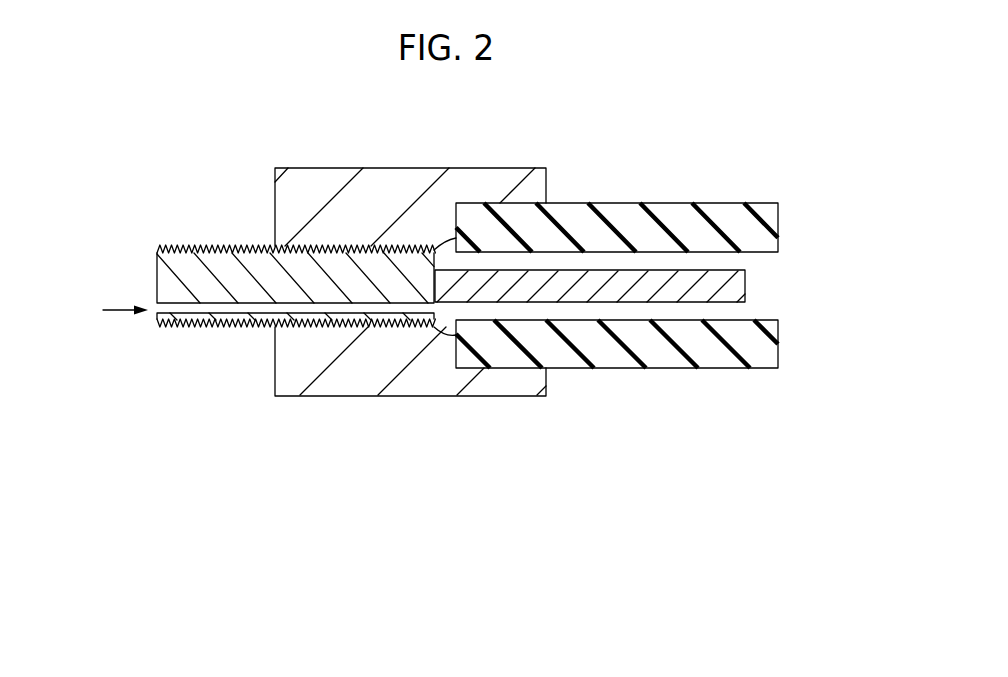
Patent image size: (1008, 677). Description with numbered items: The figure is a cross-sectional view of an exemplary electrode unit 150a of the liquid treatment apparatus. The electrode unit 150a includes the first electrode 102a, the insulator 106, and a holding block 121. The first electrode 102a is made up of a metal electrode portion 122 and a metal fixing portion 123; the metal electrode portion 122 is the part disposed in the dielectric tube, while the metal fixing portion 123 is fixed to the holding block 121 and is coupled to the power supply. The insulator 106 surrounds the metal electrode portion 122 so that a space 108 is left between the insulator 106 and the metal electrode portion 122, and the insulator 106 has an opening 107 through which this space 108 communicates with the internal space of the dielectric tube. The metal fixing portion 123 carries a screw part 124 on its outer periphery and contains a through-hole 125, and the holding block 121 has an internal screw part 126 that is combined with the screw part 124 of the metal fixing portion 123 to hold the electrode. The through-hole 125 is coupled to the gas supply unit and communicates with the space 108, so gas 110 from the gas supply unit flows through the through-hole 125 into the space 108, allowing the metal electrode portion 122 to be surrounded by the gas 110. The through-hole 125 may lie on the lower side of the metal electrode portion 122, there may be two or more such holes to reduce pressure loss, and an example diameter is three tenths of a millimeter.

The electrode unit 150a is at (235, 116).
The first electrode 102a is at (440, 518).
The insulator 106 is at (730, 212).
The opening 107 is at (792, 279).
The space 108 is at (595, 262).
The gas 110 is at (112, 310).
The holding block 121 is at (320, 390).
The metal electrode portion 122 is at (617, 297).
The metal fixing portion 123 is at (375, 293).
The screw part 124 is at (360, 258).
The through-hole 125 is at (186, 304).
The screw part 126 is at (322, 252).